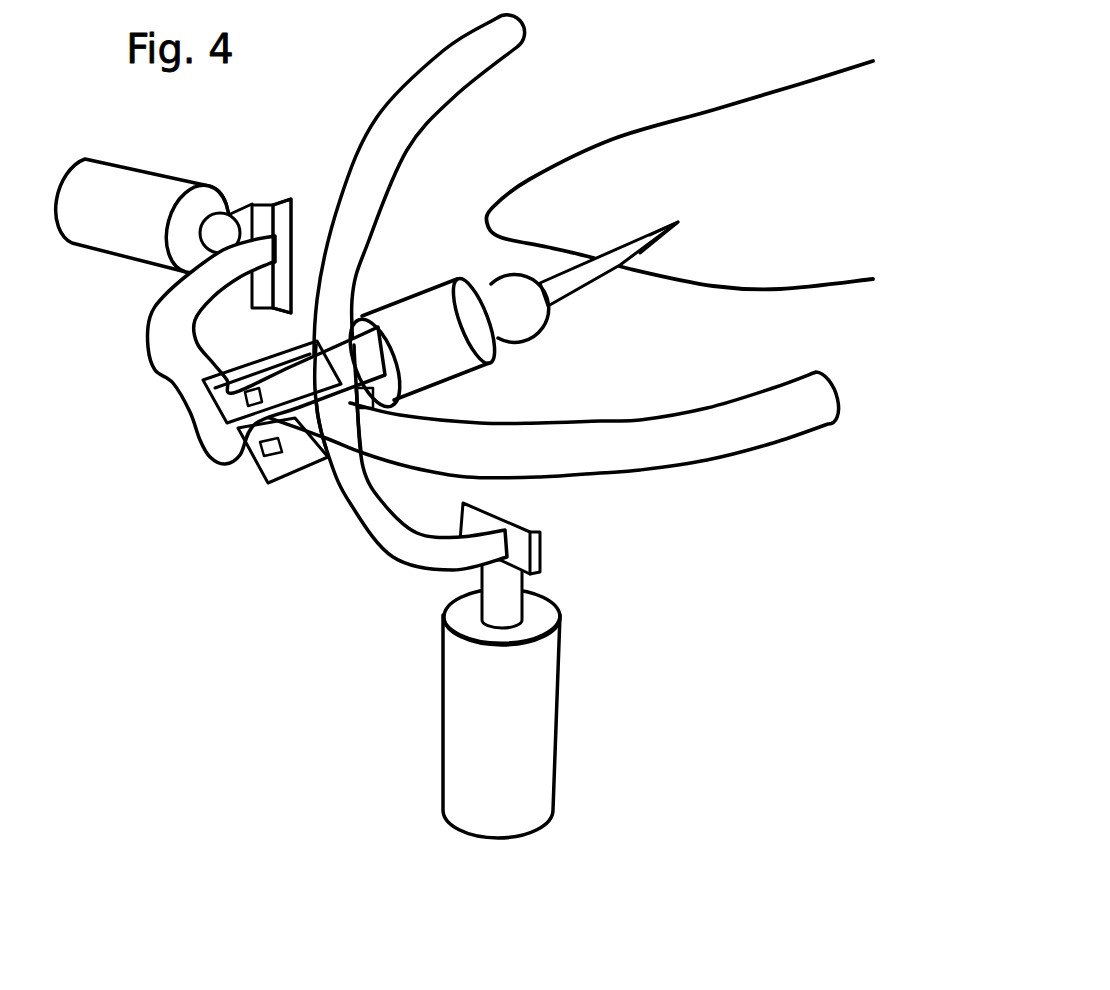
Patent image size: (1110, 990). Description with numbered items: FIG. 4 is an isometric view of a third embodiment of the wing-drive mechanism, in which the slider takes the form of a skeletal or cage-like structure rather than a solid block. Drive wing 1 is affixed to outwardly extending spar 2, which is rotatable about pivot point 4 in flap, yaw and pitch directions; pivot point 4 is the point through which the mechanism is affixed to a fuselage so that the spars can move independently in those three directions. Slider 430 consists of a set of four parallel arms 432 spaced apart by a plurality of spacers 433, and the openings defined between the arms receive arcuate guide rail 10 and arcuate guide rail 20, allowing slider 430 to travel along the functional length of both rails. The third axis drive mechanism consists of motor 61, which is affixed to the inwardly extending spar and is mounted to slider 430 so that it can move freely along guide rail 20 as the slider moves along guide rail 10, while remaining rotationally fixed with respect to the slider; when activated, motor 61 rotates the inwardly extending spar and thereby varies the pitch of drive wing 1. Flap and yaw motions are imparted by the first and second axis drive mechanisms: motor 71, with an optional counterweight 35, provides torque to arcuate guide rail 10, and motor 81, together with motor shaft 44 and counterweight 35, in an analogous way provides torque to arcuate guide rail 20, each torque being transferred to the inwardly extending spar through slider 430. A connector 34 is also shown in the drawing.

The drive wing 1 is at (683, 230).
The outwardly extending spar 2 is at (595, 275).
The pivot point 4 is at (515, 318).
The arcuate guide rail 10 is at (553, 425).
The arcuate guide rail 20 is at (440, 103).
The connector 34 is at (222, 231).
The counterweight 35 is at (607, 523).
The motor shaft 44 is at (524, 587).
The motor 61 is at (421, 343).
The motor 71 is at (147, 219).
The motor 81 is at (560, 720).
The slider 430 is at (294, 440).
The parallel arms 432 is at (293, 473).
The spacers 433 is at (370, 402).